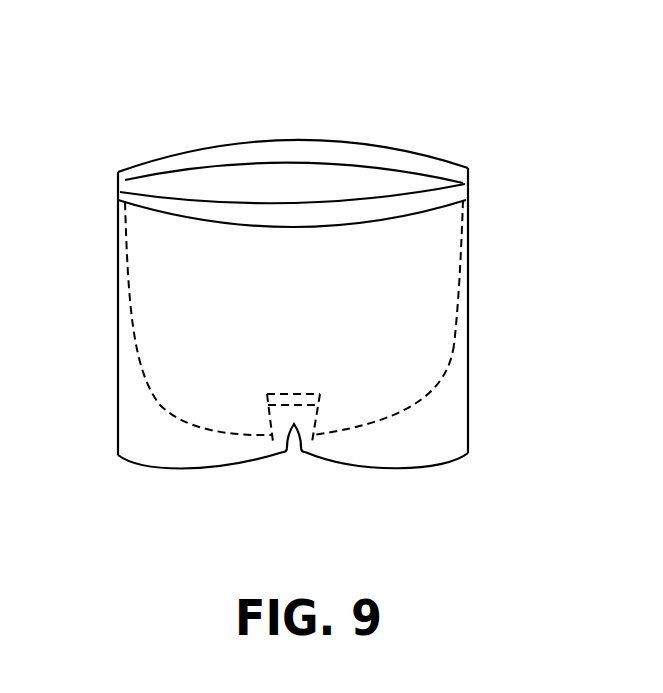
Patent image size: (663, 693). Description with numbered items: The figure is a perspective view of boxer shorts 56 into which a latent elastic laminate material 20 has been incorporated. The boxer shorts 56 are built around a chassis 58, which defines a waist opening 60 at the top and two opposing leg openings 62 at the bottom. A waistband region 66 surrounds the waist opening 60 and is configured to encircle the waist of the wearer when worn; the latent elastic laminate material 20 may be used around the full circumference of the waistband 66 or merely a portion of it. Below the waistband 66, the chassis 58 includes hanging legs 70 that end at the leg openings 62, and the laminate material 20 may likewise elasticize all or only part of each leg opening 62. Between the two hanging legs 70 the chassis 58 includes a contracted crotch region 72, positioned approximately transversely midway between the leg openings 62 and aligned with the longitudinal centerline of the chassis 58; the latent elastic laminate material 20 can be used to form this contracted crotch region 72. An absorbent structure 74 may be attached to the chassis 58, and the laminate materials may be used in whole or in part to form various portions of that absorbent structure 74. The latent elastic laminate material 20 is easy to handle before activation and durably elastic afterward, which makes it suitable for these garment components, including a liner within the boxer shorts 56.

The boxer shorts 56 is at (310, 279).
The chassis 58 is at (453, 372).
The waist opening 60 is at (277, 180).
The leg openings 62 is at (196, 480).
The waistband region 66 is at (438, 167).
The hanging legs 70 is at (162, 437).
The contracted crotch region 72 is at (328, 388).
The absorbent structure 74 is at (472, 272).
The latent elastic laminate material 20 is at (310, 215).